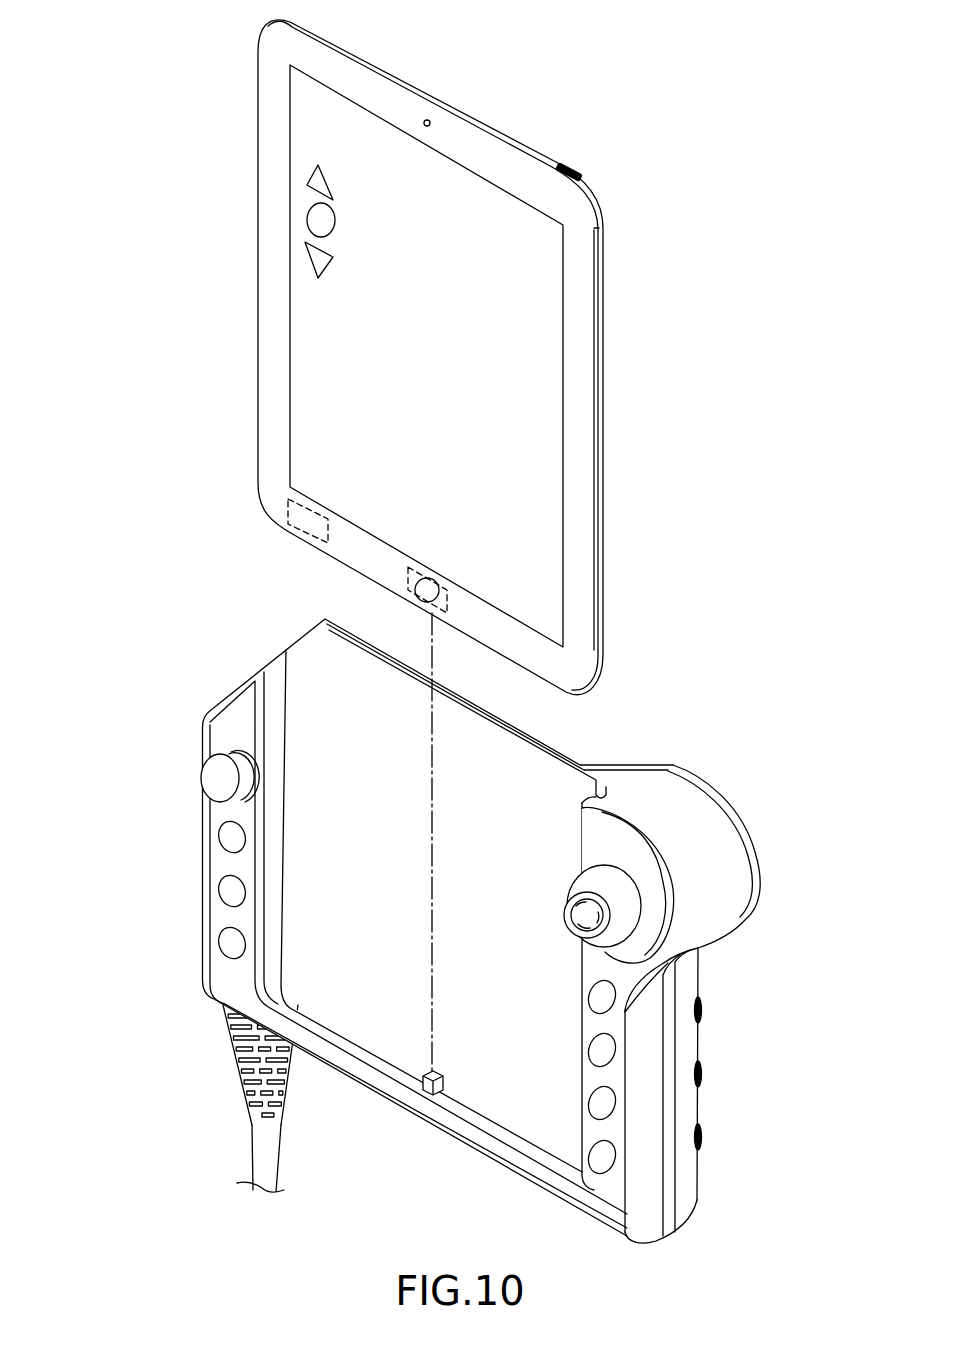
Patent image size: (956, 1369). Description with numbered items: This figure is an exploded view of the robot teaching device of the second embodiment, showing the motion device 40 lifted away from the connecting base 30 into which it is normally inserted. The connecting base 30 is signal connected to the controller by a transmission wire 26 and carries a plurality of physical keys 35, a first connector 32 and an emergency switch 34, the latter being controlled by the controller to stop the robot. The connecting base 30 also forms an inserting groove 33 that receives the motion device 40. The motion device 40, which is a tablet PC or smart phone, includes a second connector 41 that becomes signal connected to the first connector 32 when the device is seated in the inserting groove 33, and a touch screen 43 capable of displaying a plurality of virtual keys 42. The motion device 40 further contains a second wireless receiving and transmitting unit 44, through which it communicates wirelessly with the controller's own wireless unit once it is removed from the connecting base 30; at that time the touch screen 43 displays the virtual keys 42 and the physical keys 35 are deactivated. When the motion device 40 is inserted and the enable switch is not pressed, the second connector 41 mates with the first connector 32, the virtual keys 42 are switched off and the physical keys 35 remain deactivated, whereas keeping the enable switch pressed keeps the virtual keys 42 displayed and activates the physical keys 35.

The motion device 40 is at (511, 127).
The second connector 41 is at (443, 597).
The virtual keys 42 is at (317, 177).
The touch screen 43 is at (316, 348).
The second wireless receiving and transmitting unit 44 is at (296, 512).
The connecting base 30 is at (451, 916).
The first connector 32 is at (428, 1095).
The inserting groove 33 is at (275, 678).
The emergency switch 34 is at (580, 912).
The physical keys 35 is at (228, 876).
The transmission wire 26 is at (257, 1152).